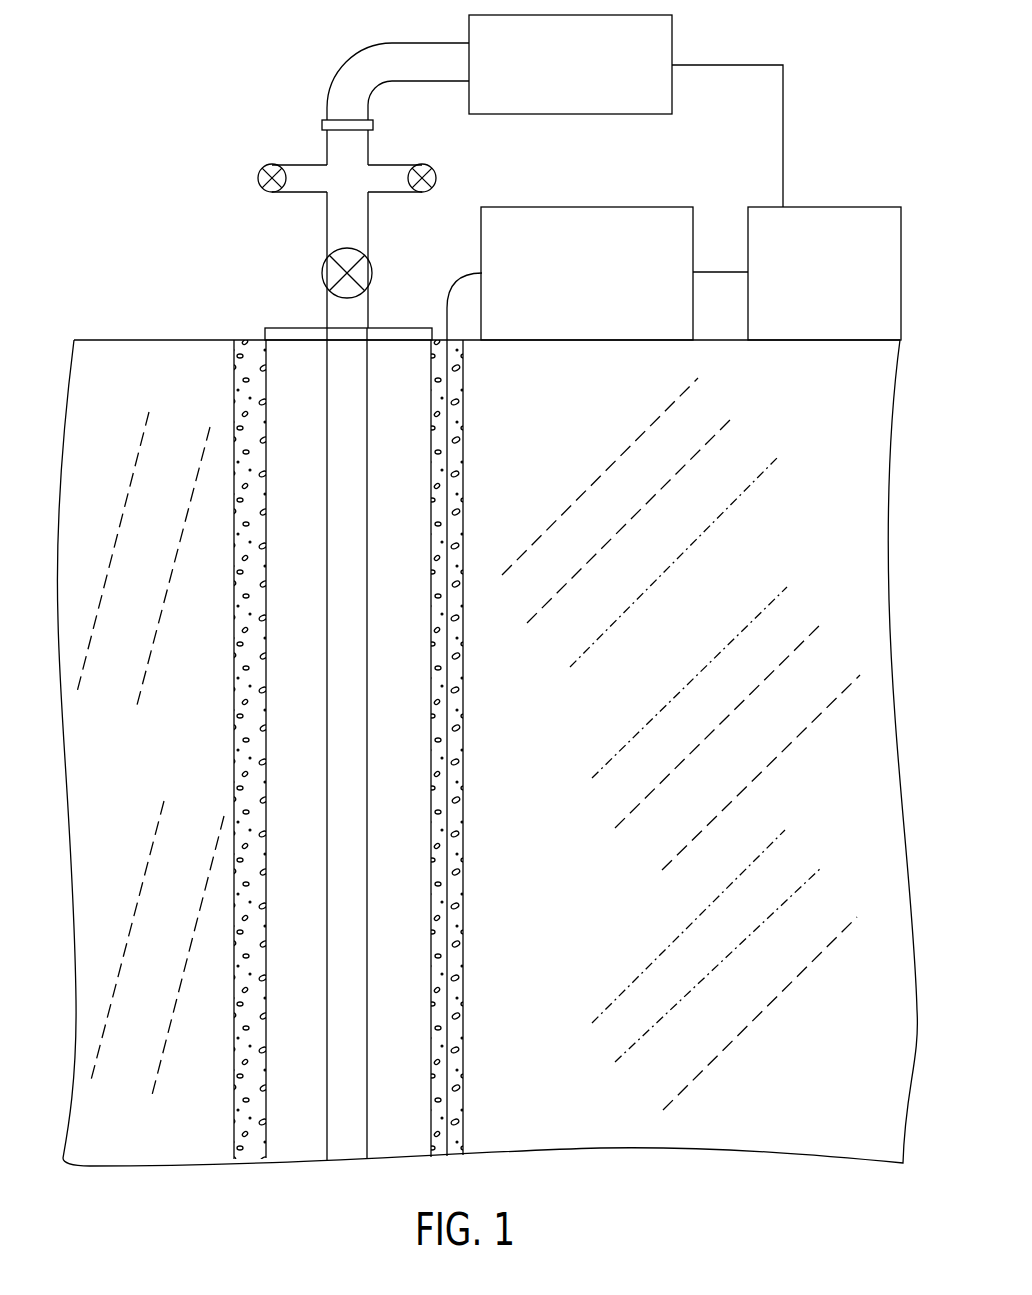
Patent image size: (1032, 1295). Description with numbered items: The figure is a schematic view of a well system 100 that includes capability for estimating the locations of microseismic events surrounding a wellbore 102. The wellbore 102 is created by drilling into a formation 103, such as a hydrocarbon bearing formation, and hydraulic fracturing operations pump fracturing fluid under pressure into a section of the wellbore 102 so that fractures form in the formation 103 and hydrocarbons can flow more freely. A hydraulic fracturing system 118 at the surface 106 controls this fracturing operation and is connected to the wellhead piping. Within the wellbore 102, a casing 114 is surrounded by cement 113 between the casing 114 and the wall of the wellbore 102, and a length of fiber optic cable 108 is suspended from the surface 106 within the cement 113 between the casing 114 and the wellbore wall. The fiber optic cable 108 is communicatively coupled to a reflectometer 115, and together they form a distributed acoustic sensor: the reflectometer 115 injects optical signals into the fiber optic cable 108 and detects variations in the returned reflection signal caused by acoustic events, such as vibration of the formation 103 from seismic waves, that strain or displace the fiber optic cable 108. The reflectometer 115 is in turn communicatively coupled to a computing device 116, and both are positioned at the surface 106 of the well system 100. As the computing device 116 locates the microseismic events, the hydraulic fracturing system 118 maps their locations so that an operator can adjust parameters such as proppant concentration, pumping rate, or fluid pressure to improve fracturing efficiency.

The well system 100 is at (113, 322).
The wellbore 102 is at (465, 1127).
The formation 103 is at (85, 430).
The surface 106 is at (146, 340).
The fiber optic cable 108 is at (462, 286).
The cement 113 is at (243, 748).
The casing 114 is at (254, 530).
The reflectometer 115 is at (590, 207).
The computing device 116 is at (845, 207).
The hydraulic fracturing system 118 is at (673, 33).